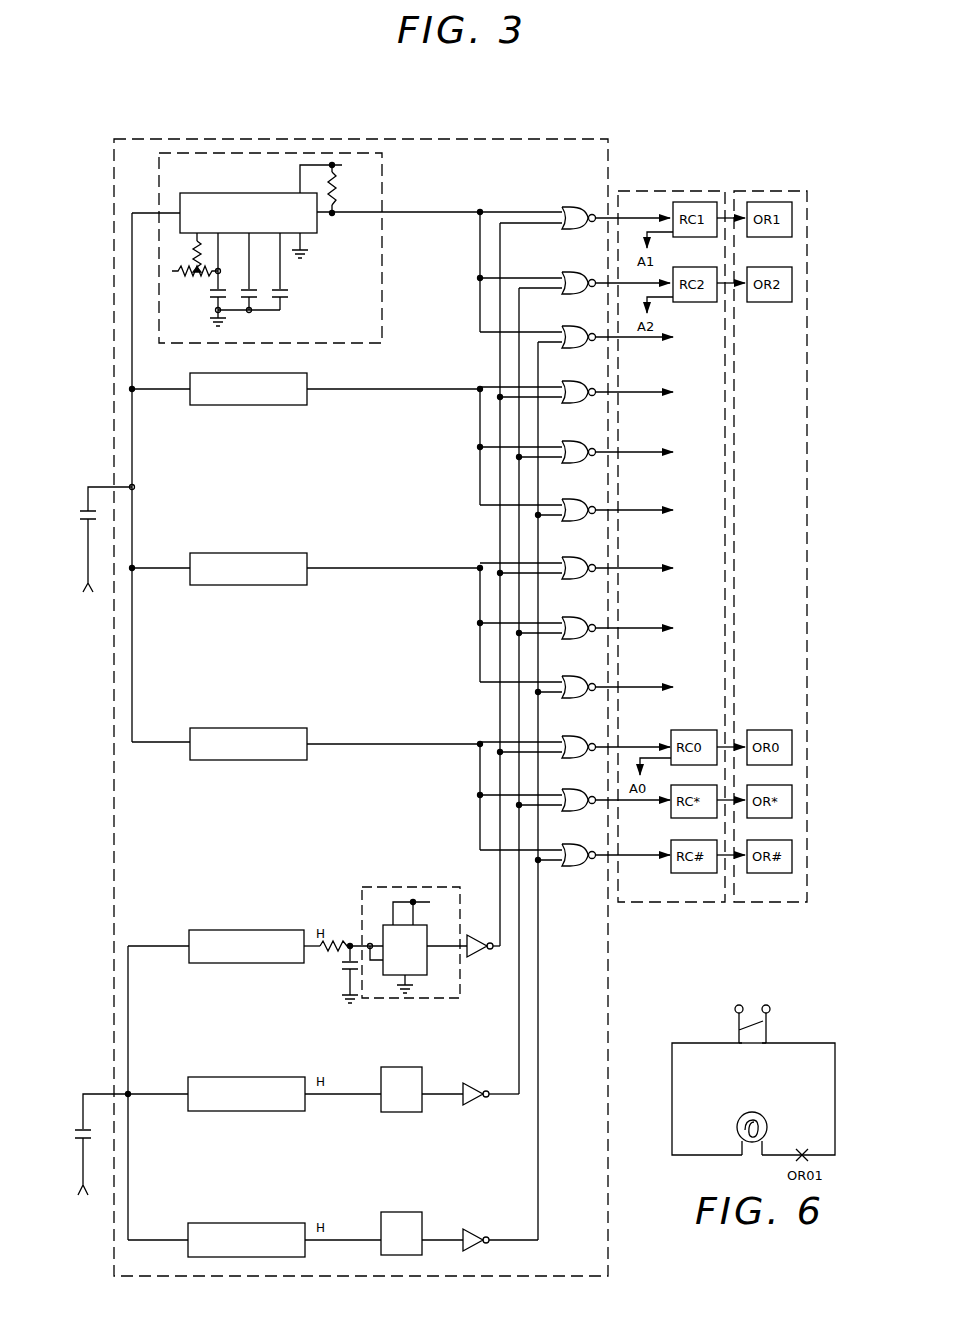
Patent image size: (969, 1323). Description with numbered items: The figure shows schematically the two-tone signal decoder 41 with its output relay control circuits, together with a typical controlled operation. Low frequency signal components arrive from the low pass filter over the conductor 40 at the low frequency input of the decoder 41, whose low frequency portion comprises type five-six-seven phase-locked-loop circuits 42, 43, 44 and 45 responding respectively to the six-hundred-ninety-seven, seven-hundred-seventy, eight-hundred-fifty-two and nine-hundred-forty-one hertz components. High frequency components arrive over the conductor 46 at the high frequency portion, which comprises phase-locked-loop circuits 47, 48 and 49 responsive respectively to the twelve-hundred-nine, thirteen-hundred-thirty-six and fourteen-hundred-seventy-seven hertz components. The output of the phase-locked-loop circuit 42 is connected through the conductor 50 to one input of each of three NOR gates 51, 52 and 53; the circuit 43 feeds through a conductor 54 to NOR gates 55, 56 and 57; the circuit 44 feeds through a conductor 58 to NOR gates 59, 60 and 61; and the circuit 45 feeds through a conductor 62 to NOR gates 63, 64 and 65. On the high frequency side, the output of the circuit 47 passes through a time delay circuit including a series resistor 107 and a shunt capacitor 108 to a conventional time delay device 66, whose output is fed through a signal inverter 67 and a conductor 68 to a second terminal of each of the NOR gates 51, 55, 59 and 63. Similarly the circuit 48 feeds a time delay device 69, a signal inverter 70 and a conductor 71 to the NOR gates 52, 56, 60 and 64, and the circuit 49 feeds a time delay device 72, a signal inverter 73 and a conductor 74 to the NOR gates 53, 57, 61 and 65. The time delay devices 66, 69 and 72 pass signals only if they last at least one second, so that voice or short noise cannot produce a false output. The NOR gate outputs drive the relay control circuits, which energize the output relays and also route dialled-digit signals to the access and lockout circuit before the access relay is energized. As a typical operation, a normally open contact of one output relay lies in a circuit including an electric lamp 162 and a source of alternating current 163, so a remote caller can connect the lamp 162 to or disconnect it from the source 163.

In FIG. 3, the conductor 40 is at (88, 553).
In FIG. 3, the two-tone signal decoder 41 is at (113, 322).
In FIG. 3, the phase-locked-loop circuit 42 is at (382, 290).
In FIG. 3, the phase-locked-loop circuit 43 is at (291, 406).
In FIG. 3, the phase-locked-loop circuit 44 is at (293, 585).
In FIG. 3, the phase-locked-loop circuit 45 is at (293, 762).
In FIG. 3, the conductor 46 is at (83, 1165).
In FIG. 3, the phase-locked-loop circuit 47 is at (289, 964).
In FIG. 3, the phase-locked-loop circuit 48 is at (277, 1114).
In FIG. 3, the phase-locked-loop circuit 49 is at (247, 1222).
In FIG. 3, the conductor 50 is at (439, 210).
In FIG. 3, the NOR gate 51 is at (578, 206).
In FIG. 3, the NOR gate 52 is at (578, 271).
In FIG. 3, the NOR gate 53 is at (576, 326).
In FIG. 3, the conductor 54 is at (430, 387).
In FIG. 3, the NOR gate 55 is at (578, 380).
In FIG. 3, the NOR gate 56 is at (578, 440).
In FIG. 3, the NOR gate 57 is at (578, 498).
In FIG. 3, the conductor 58 is at (415, 568).
In FIG. 3, the NOR gate 59 is at (578, 556).
In FIG. 3, the NOR gate 60 is at (578, 616).
In FIG. 3, the NOR gate 61 is at (578, 675).
In FIG. 3, the conductor 62 is at (413, 742).
In FIG. 3, the NOR gate 63 is at (578, 735).
In FIG. 3, the NOR gate 64 is at (578, 788).
In FIG. 3, the NOR gate 65 is at (578, 843).
In FIG. 3, the time delay device 66 is at (410, 886).
In FIG. 3, the signal inverter 67 is at (488, 950).
In FIG. 3, the conductor 68 is at (500, 869).
In FIG. 3, the time delay device 69 is at (406, 1067).
In FIG. 3, the signal inverter 70 is at (474, 1104).
In FIG. 3, the conductor 71 is at (519, 1031).
In FIG. 3, the time delay device 72 is at (403, 1212).
In FIG. 3, the signal inverter 73 is at (477, 1229).
In FIG. 3, the conductor 74 is at (538, 1163).
In FIG. 3, the series resistor 107 is at (338, 928).
In FIG. 3, the shunt capacitor 108 is at (341, 976).
In FIG. 6, the electric lamp 162 is at (754, 1110).
In FIG. 6, the source of alternating current 163 is at (766, 1030).